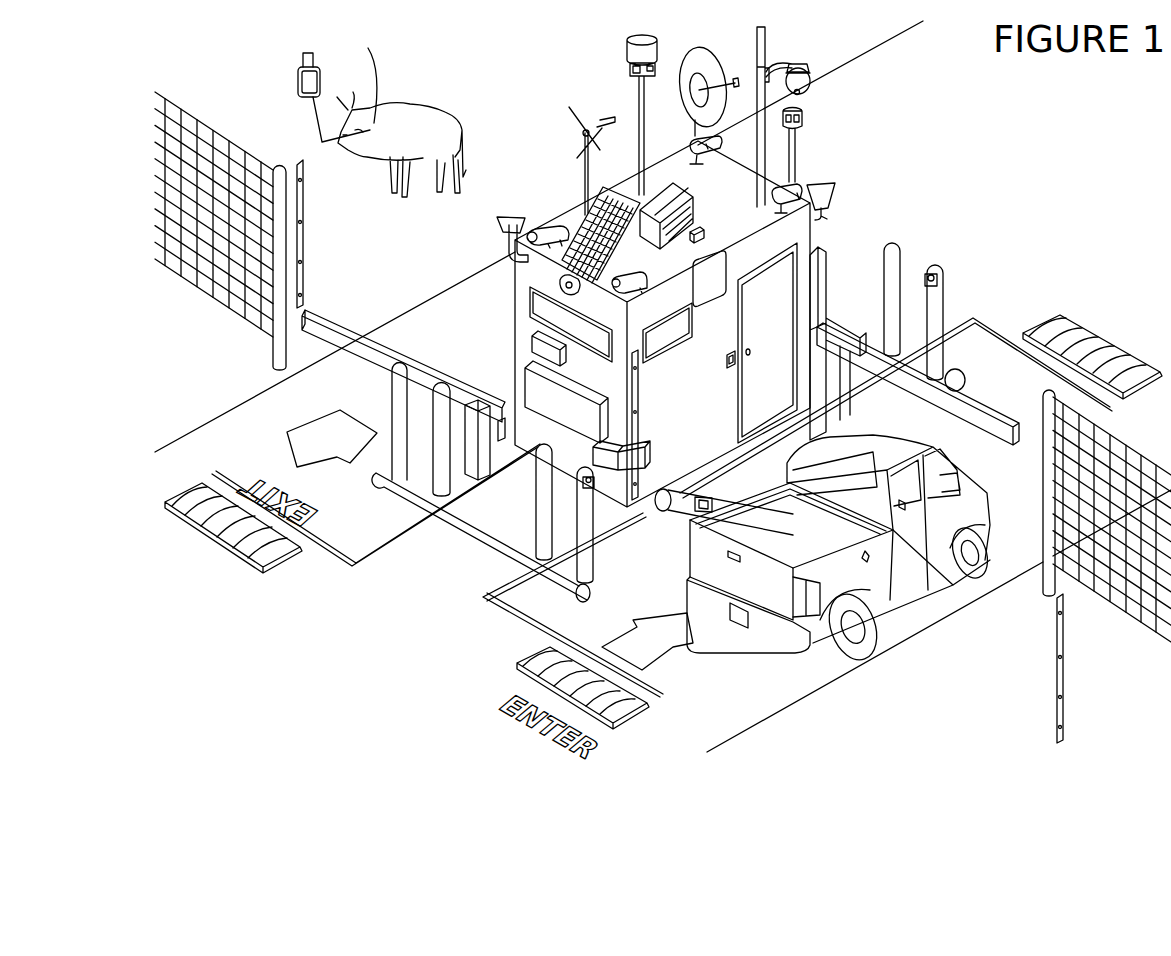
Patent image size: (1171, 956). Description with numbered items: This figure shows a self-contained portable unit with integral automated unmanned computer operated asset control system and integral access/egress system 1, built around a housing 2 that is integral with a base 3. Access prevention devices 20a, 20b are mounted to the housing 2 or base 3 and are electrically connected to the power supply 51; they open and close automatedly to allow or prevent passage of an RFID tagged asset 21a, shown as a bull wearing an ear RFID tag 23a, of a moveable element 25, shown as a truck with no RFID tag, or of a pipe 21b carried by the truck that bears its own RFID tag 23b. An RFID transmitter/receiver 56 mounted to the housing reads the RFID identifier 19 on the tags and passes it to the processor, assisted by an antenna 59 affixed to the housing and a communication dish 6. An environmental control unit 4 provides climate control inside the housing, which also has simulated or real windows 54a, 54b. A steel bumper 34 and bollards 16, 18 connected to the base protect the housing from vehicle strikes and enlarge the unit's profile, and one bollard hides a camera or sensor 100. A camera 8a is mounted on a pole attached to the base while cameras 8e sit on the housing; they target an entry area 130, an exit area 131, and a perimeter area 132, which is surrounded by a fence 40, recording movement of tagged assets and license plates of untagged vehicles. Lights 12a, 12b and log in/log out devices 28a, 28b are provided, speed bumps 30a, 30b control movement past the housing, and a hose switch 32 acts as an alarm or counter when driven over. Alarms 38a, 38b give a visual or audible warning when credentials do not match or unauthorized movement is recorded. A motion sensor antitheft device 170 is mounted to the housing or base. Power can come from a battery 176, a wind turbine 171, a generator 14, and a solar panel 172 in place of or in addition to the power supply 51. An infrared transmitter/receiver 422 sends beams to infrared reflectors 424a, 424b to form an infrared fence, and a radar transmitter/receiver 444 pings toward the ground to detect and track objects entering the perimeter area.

The self-contained portable unit with integral automated unmanned computer operated 1 is at (507, 92).
The housing 2 is at (572, 220).
The base 3 is at (655, 520).
The environmental control unit 4 is at (672, 183).
The communication dish 6 is at (705, 68).
The camera 8a is at (812, 75).
The camera 8e is at (552, 227).
The light 12a is at (827, 190).
The light 12b is at (497, 220).
The generator 14 is at (532, 340).
The bollard 16 is at (895, 243).
The bollard 18 is at (942, 275).
The RFID identifier 19 is at (318, 75).
The access prevention device 20a is at (943, 405).
The access prevention device 20b is at (357, 353).
The RFID tagged asset 21a is at (403, 127).
The pipe 21b is at (677, 512).
The RFID tag 23a is at (312, 60).
The RFID tag 23b is at (710, 502).
The moveable element 25 is at (913, 573).
The log in/log out device 28a is at (645, 452).
The log in/log out device 28b is at (726, 362).
The speed bump 30a is at (527, 660).
The speed bump 30b is at (278, 553).
The hose switch 32 is at (480, 598).
The steel bumper 34 is at (478, 530).
The alarm 38a is at (580, 293).
The alarm 38b is at (802, 120).
The fence 40 is at (237, 155).
The power supply 51 is at (825, 268).
The window 54a is at (572, 328).
The window 54b is at (657, 343).
The RFID transmitter/receiver 56 is at (718, 283).
The antenna 59 is at (766, 40).
The hidden camera or sensor 100 is at (610, 520).
The entry area 130 is at (800, 684).
The exit area 131 is at (262, 420).
The perimeter area 132 is at (1054, 136).
The motion sensor antitheft device 170 is at (702, 230).
The wind turbine 171 is at (577, 135).
The solar panel 172 is at (618, 200).
The battery 176 is at (532, 382).
The infrared transmitter/receiver 422 is at (640, 400).
The infrared reflector 424a is at (1063, 663).
The infrared reflector 424b is at (302, 207).
The radar transmitter/receiver 444 is at (627, 52).